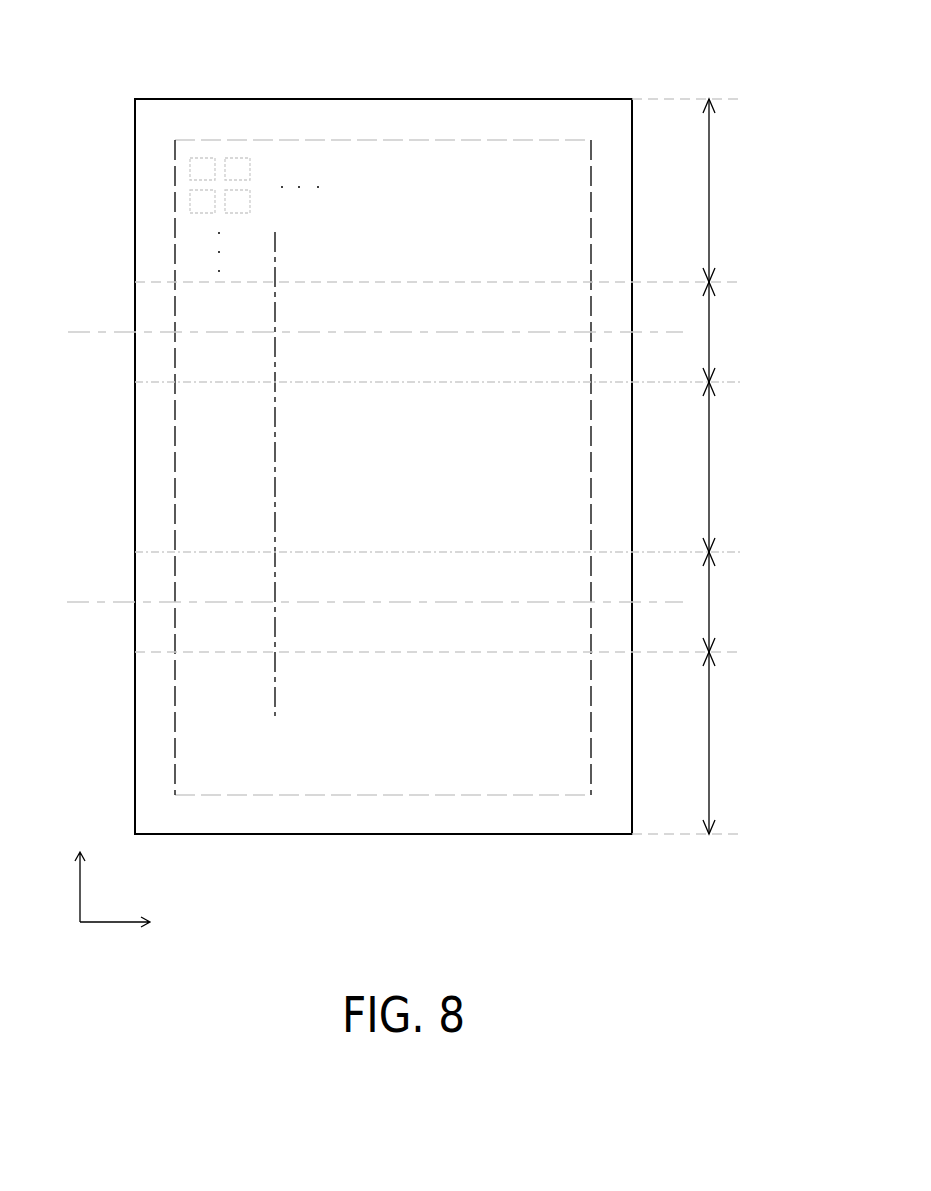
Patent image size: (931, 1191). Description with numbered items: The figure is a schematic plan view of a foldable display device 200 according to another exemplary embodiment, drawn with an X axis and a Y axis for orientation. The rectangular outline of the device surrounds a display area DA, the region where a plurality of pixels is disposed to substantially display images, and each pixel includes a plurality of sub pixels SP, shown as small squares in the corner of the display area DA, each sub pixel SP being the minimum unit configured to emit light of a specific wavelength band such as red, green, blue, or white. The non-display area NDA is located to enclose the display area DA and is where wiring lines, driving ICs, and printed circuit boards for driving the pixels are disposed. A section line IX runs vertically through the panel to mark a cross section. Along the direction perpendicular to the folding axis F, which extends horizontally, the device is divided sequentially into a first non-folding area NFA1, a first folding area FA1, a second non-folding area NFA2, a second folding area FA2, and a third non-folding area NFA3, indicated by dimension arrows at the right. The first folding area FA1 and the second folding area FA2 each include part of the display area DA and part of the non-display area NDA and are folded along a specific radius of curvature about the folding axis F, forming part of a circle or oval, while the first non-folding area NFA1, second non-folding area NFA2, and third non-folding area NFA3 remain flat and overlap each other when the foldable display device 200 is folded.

The foldable display device 200 is at (616, 34).
The non-display area NDA is at (155, 167).
The display area DA is at (207, 232).
The sub pixel SP is at (196, 157).
The section line IX-IX' IX is at (275, 232).
The folding axis F is at (365, 465).
The first non-folding area NFA1 is at (737, 190).
The first folding area FA1 is at (728, 332).
The second non-folding area NFA2 is at (737, 467).
The second folding area FA2 is at (728, 602).
The third non-folding area NFA3 is at (737, 743).
The X axis direction X is at (124, 920).
The Y axis direction Y is at (80, 872).